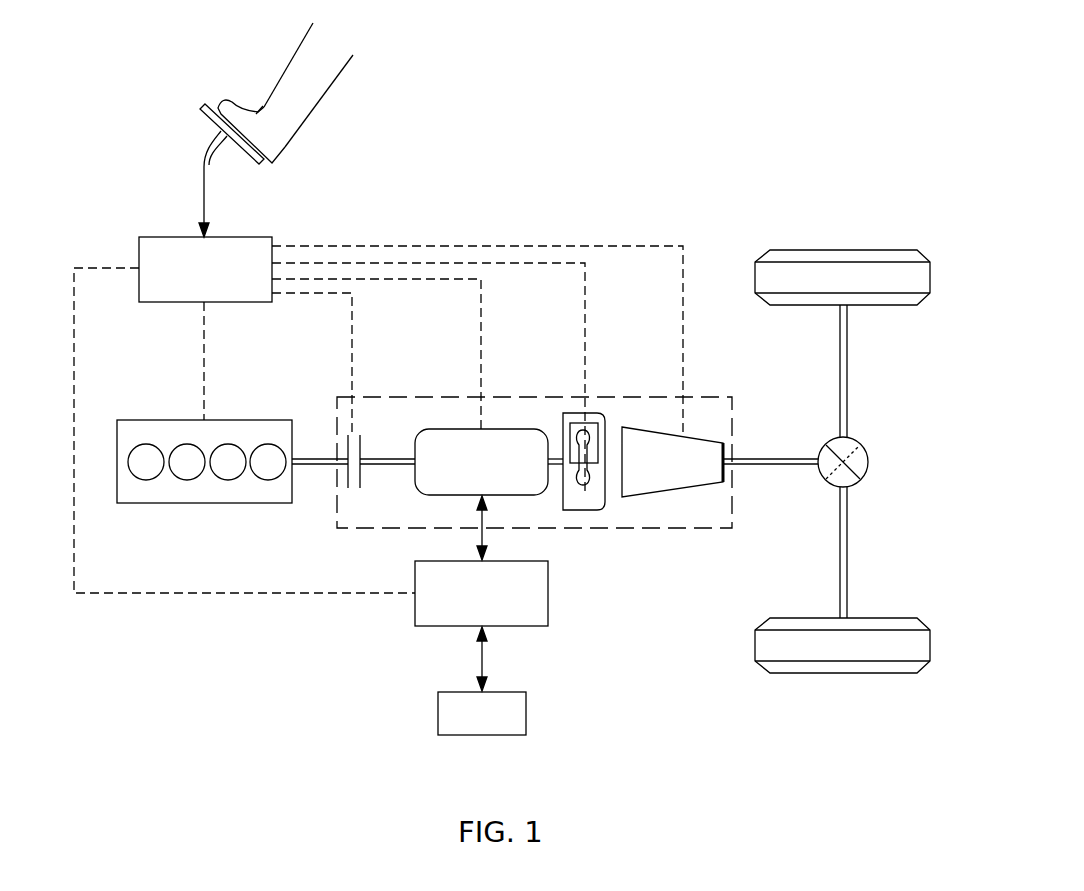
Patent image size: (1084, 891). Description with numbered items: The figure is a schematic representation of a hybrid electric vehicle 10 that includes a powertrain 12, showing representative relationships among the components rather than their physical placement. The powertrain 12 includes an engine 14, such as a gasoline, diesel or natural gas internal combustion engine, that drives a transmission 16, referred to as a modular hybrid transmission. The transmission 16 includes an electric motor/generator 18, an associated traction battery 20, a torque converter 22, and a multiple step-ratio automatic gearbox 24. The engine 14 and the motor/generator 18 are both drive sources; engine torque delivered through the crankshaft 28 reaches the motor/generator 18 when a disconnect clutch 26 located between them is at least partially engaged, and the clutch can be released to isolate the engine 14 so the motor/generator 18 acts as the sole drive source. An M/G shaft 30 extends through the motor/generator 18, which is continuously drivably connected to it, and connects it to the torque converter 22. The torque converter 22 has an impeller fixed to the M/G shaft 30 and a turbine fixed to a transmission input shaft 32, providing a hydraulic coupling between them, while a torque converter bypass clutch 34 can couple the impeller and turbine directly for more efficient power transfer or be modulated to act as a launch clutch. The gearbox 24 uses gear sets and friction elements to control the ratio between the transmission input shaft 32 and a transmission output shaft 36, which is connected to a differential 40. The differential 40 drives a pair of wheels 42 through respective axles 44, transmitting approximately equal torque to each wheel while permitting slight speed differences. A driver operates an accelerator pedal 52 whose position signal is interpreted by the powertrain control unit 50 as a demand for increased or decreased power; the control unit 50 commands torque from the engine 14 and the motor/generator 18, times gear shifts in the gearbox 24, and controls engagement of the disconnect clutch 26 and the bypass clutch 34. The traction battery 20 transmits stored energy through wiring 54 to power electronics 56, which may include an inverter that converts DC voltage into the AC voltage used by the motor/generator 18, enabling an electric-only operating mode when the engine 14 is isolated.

The hybrid electric vehicle 10 is at (741, 180).
The powertrain 12 is at (286, 638).
The engine 14 is at (135, 420).
The transmission 16 is at (515, 397).
The electric motor/generator 18 is at (460, 428).
The traction battery 20 is at (438, 715).
The torque converter 22 is at (578, 512).
The gearbox 24 is at (660, 497).
The disconnect clutch 26 is at (356, 474).
The crankshaft 28 is at (322, 458).
The M/G shaft 30 is at (393, 458).
The transmission input shaft 32 is at (600, 452).
The torque converter bypass clutch 34 is at (584, 425).
The transmission output shaft 36 is at (787, 457).
The differential 40 is at (868, 462).
The wheels 42 is at (845, 250).
The axles 44 is at (848, 372).
The powertrain control unit 50 is at (158, 237).
The accelerator pedal 52 is at (200, 118).
The wiring 54 is at (480, 660).
The power electronics 56 is at (548, 595).